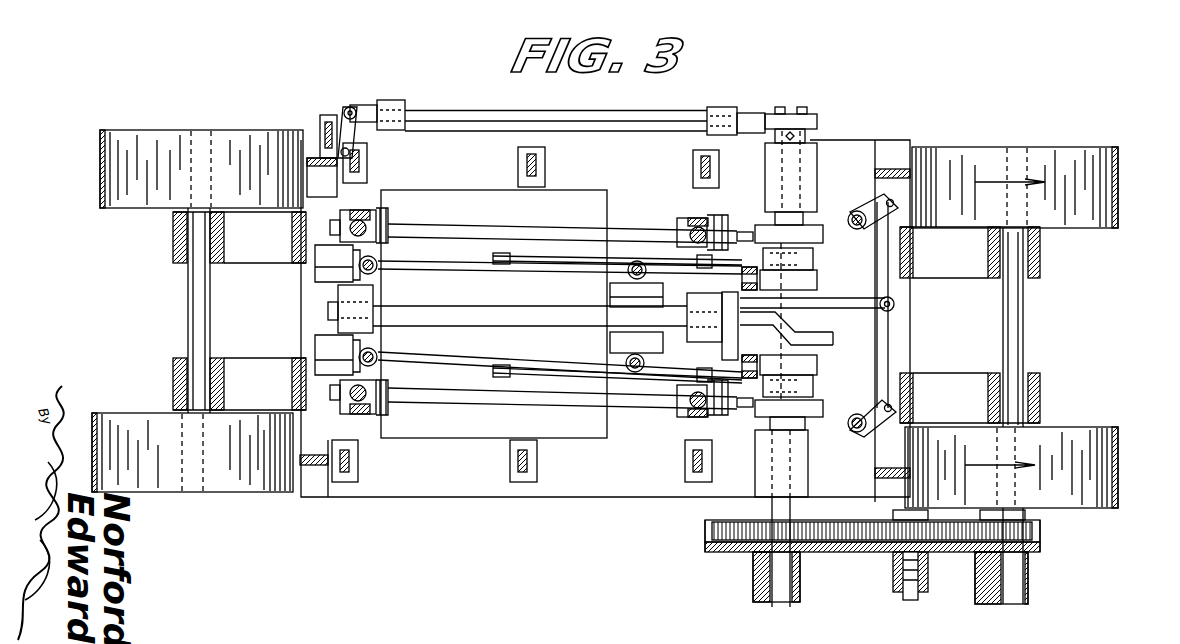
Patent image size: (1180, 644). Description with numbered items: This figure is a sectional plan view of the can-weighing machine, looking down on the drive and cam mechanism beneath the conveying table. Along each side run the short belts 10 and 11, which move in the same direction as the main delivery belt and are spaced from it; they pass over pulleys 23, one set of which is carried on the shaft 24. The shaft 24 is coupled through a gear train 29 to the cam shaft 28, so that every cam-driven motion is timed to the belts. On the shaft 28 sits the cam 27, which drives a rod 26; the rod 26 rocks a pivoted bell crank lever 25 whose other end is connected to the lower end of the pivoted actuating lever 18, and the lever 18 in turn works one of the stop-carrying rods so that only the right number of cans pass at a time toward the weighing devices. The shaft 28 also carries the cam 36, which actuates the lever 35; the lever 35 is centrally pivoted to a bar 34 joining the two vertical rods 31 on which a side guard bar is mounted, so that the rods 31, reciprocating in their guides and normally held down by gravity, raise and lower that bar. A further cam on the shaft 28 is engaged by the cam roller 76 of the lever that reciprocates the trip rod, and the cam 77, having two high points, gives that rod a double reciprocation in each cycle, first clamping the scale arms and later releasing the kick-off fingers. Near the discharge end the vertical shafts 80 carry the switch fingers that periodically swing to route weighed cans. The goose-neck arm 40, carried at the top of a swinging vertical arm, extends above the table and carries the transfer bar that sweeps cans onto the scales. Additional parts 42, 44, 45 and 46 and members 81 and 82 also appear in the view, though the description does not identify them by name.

The belt 10 is at (96, 440).
The belt 11 is at (98, 178).
The actuating lever 18 is at (328, 118).
The pulleys 23 is at (168, 205).
The shaft 24 is at (209, 323).
The bell crank lever 25 is at (340, 108).
The rod 26 is at (490, 114).
The cam 27 is at (776, 116).
The shaft 28 is at (806, 214).
The gear train 29 is at (848, 552).
The vertical rods 31 is at (380, 264).
The bar 34 is at (455, 270).
The lever 35 is at (596, 262).
The cam 36 is at (815, 258).
The goose-neck arm 40 is at (718, 358).
The shaft 42 is at (514, 318).
The arm 44 is at (820, 332).
The collar 45 is at (740, 320).
The arm 46 is at (860, 298).
The cam roller 76 is at (742, 280).
The cam 77 is at (817, 280).
The vertical shafts 80 is at (854, 229).
The lever 81 is at (866, 208).
The link 82 is at (880, 356).